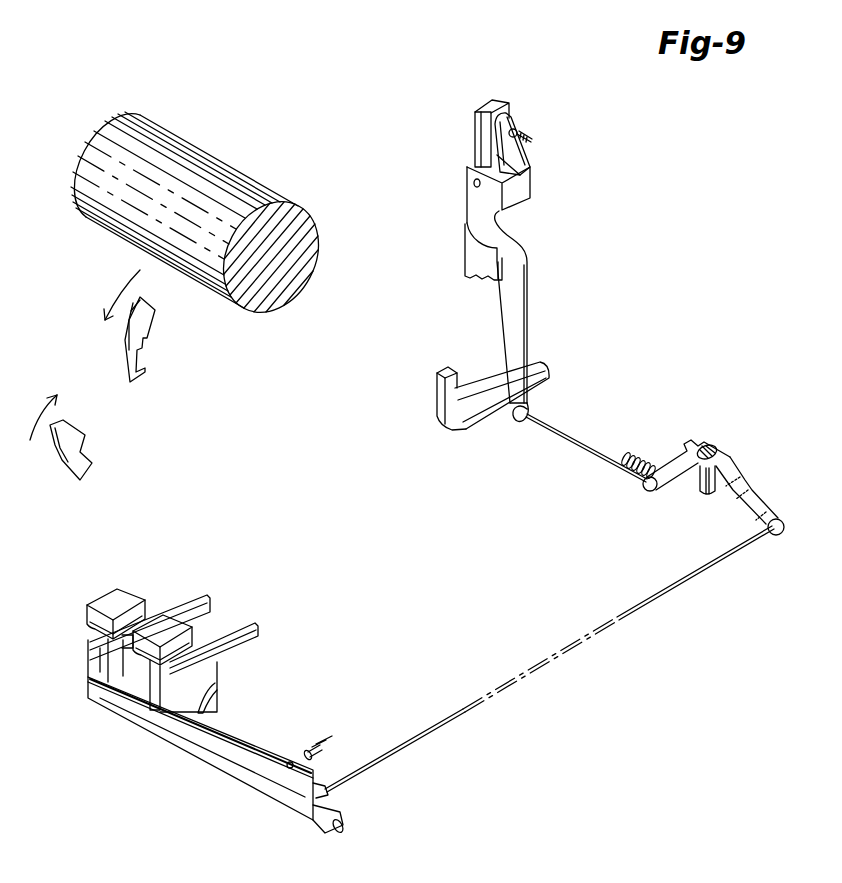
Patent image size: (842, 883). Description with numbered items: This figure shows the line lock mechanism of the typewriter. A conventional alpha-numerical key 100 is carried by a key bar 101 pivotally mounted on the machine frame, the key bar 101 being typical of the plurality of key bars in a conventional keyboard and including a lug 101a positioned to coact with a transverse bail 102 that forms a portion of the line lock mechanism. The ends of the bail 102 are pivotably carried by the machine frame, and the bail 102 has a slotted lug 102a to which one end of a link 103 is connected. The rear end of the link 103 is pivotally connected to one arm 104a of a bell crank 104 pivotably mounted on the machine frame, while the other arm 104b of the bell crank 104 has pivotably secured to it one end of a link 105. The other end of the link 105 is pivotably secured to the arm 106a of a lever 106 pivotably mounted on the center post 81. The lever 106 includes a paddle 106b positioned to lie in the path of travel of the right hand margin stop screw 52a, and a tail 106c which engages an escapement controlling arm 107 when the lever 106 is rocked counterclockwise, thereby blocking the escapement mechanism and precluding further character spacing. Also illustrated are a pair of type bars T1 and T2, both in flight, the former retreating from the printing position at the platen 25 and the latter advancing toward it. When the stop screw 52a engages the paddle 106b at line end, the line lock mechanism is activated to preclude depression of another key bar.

The platen 25 is at (262, 197).
The type bar T1 is at (141, 352).
The type bar T2 is at (80, 455).
The center post 81 is at (475, 123).
The lever 106 is at (520, 195).
The arm of lever 106a is at (517, 358).
The paddle 106b is at (512, 115).
The tail 106c is at (527, 420).
The right hand margin stop screw 52a is at (530, 135).
The escapement controlling arm 107 is at (488, 407).
The link 105 is at (590, 447).
The bell crank 104 is at (717, 447).
The arm of bell crank 104a is at (753, 507).
The arm of bell crank 104b is at (660, 493).
The link 103 is at (683, 580).
The alpha-numerical key 100 is at (183, 643).
The key bar 101 is at (240, 645).
The lug 101a is at (217, 697).
The transverse bail 102 is at (267, 740).
The slotted lug 102a is at (328, 795).